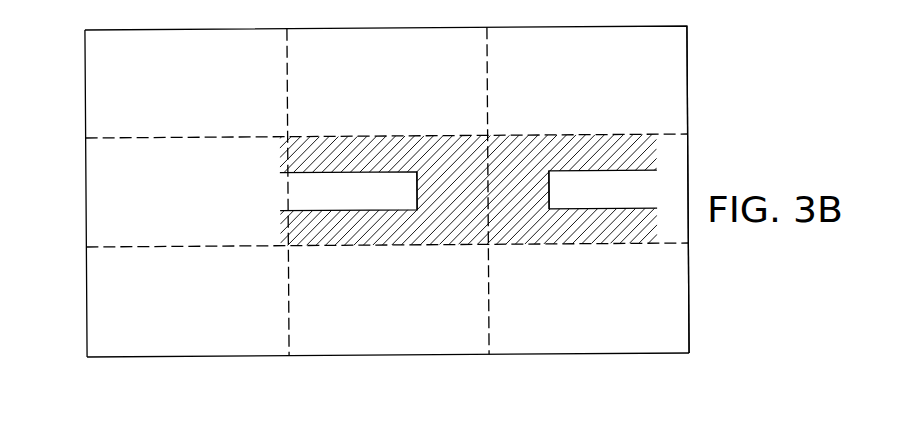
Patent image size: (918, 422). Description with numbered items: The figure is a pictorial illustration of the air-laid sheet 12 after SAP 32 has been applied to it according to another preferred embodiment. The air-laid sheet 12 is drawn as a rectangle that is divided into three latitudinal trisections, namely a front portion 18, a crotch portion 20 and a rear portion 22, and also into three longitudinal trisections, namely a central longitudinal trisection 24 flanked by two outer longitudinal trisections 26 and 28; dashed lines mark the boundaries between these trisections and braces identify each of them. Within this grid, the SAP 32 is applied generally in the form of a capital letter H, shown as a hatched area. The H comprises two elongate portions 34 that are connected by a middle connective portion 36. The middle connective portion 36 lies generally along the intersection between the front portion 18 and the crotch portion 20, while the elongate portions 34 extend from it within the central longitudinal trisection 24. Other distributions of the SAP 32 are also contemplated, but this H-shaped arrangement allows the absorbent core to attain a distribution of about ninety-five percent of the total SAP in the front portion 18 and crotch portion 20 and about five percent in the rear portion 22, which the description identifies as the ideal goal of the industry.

The air-laid sheet 12 is at (136, 53).
The front portion 18 is at (688, 356).
The crotch portion 20 is at (488, 356).
The rear portion 22 is at (288, 356).
The central longitudinal trisection 24 is at (85, 136).
The outer longitudinal trisection 26 is at (85, 28).
The outer longitudinal trisection 28 is at (85, 245).
The SAP 32 is at (548, 147).
The elongate portions 34 is at (585, 217).
The middle connective portion 36 is at (480, 182).